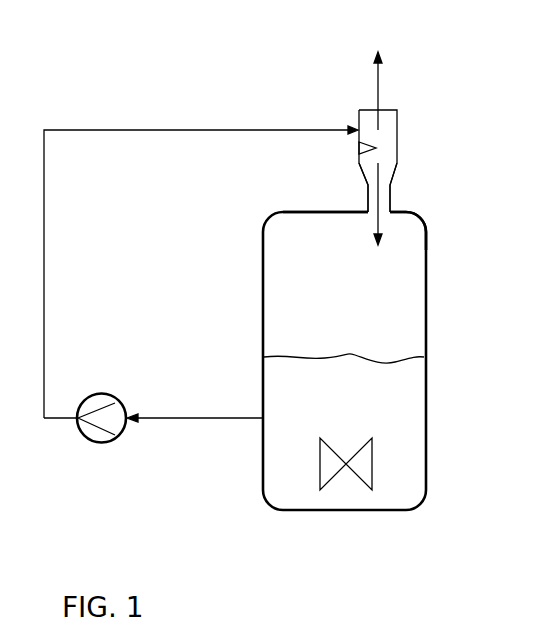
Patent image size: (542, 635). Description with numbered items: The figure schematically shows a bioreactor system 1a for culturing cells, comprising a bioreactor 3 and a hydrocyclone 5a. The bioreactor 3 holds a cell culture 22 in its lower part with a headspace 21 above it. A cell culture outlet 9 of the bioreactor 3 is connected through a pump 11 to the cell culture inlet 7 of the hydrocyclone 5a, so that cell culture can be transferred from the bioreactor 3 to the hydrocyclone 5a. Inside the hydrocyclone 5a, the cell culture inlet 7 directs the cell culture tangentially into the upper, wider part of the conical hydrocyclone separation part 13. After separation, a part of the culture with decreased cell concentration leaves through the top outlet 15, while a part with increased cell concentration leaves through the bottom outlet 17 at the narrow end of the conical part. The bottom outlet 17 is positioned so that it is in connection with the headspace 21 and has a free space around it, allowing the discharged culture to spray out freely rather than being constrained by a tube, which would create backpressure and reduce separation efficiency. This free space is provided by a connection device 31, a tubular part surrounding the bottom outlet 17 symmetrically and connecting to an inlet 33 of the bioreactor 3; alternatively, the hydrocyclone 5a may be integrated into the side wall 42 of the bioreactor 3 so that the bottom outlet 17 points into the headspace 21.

The bioreactor system 1a is at (282, 265).
The bioreactor 3 is at (262, 300).
The wall 42 is at (300, 209).
The inlet 33 is at (395, 213).
The headspace 21 is at (347, 316).
The cell culture 22 is at (391, 418).
The hydrocyclone 5a is at (397, 150).
The connection device 31 is at (367, 193).
The bottom outlet 17 is at (391, 187).
The hydrocyclone separation part 13 is at (372, 150).
The top outlet 15 is at (377, 90).
The cell culture inlet 7 is at (357, 122).
The pump 11 is at (102, 445).
The cell culture outlet 9 is at (260, 424).